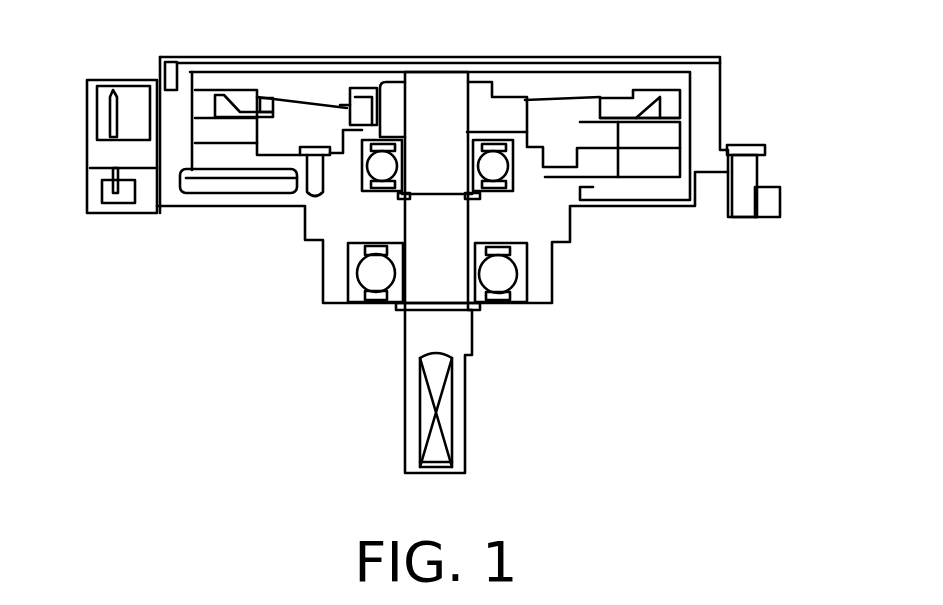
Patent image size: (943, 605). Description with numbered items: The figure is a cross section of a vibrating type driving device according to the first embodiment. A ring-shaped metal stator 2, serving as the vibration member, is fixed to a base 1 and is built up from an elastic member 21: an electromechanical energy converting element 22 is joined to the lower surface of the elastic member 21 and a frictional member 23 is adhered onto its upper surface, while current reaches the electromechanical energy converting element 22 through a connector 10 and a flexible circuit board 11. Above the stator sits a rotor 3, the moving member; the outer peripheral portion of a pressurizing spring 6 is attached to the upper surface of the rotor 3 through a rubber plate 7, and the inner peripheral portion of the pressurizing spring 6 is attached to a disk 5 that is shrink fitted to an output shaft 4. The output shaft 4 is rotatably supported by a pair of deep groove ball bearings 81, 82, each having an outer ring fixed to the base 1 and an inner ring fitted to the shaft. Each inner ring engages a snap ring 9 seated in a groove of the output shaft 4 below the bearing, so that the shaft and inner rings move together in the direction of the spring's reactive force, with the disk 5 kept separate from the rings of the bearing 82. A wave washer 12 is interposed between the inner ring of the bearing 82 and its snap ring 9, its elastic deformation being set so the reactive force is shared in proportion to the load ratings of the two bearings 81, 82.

The base 1 is at (770, 202).
The stator 2 is at (857, 65).
The rotor 3 is at (672, 105).
The output shaft 4 is at (438, 90).
The disk 5 is at (392, 90).
The pressurizing spring 6 is at (298, 100).
The rubber plate 7 is at (253, 97).
The snap ring 9 is at (485, 193).
The connector 10 is at (98, 156).
The flexible circuit board 11 is at (182, 192).
The wave washer 12 is at (485, 193).
The elastic member 21 is at (673, 158).
The electromechanical energy converting element 22 is at (695, 168).
The frictional member 23 is at (680, 110).
The deep groove ball bearing 81 is at (377, 283).
The deep groove ball bearing 82 is at (378, 180).